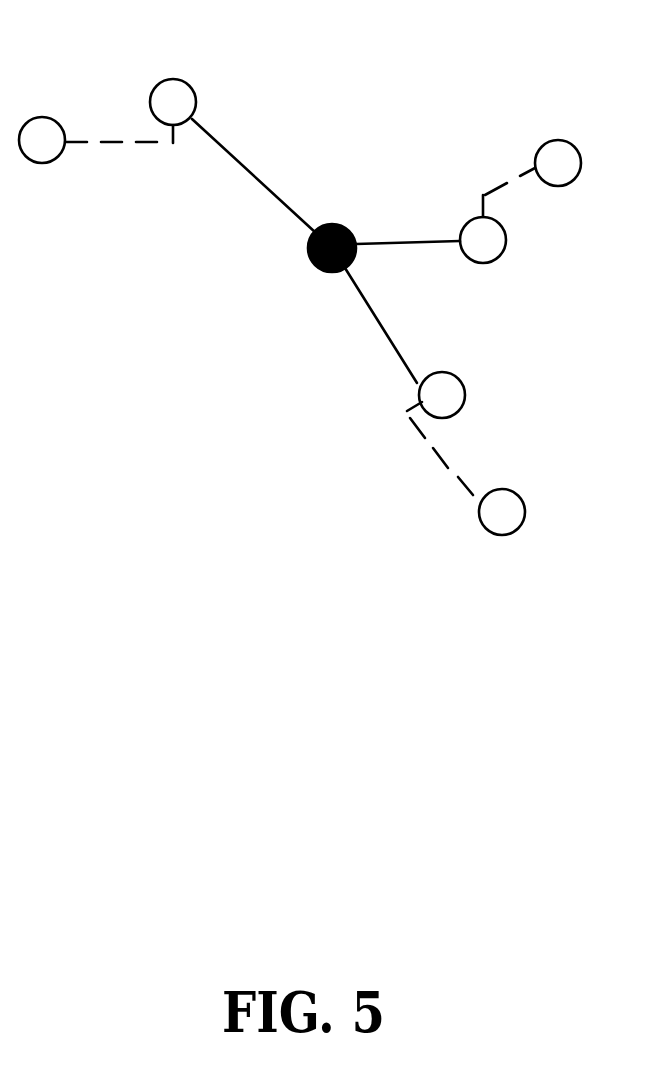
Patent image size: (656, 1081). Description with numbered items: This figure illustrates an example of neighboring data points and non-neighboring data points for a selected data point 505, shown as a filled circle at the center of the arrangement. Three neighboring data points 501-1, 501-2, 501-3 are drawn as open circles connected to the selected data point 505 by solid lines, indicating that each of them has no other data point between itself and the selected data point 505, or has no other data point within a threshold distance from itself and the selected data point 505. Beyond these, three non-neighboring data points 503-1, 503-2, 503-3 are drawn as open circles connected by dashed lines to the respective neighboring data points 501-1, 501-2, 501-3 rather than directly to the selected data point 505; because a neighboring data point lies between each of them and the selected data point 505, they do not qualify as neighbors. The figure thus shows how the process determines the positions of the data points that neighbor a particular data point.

The selected data point 505 is at (338, 225).
The neighboring data point 501-1 is at (505, 240).
The neighboring data point 501-2 is at (465, 393).
The neighboring data point 501-3 is at (170, 79).
The non-neighboring data point 503-1 is at (558, 140).
The non-neighboring data point 503-2 is at (525, 510).
The non-neighboring data point 503-3 is at (40, 117).